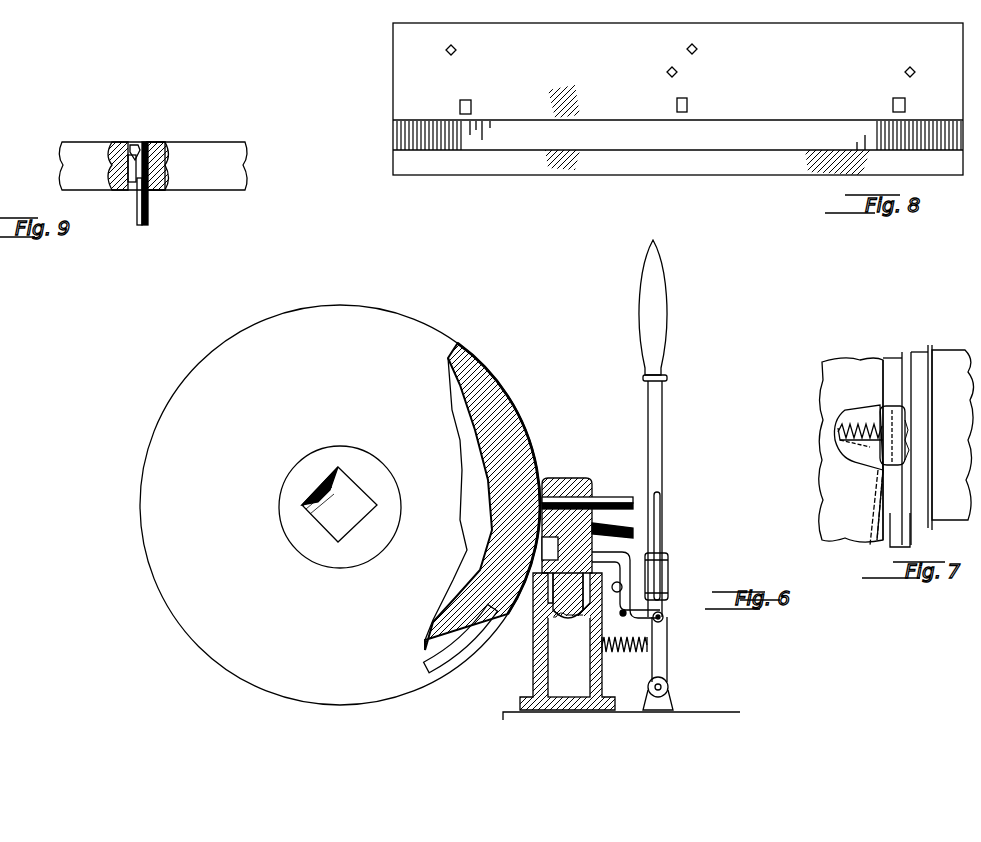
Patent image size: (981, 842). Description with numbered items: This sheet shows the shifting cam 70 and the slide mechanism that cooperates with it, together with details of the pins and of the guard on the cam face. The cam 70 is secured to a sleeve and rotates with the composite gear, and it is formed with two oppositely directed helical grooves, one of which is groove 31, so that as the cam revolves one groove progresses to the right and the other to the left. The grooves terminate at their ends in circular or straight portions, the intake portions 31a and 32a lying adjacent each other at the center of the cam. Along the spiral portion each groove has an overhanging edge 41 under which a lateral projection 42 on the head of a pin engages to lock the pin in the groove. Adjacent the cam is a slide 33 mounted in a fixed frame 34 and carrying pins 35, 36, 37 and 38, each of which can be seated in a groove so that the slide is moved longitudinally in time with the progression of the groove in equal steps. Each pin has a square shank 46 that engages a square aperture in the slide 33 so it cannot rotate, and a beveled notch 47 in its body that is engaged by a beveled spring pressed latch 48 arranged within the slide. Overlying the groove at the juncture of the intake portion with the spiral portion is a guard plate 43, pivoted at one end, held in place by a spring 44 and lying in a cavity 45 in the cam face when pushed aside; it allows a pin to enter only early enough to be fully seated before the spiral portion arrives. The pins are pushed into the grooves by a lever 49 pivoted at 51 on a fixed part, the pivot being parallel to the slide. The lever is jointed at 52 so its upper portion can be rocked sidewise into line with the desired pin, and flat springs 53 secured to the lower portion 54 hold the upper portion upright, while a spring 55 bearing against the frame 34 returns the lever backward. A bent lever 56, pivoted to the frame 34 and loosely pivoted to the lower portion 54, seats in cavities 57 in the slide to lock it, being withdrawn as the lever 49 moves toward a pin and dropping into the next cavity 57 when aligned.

In FIG. 6, the shifting cam 70 is at (515, 437).
In FIG. 7, the shifting cam 70 is at (953, 437).
In FIG. 6, the overhanging edge 41 is at (455, 660).
In FIG. 7, the overhanging edge 41 is at (878, 505).
In FIG. 6, the slide 33 is at (572, 483).
In FIG. 8, the slide 33 is at (678, 99).
In FIG. 9, the slide 33 is at (153, 166).
In FIG. 6, the pin 35 is at (608, 497).
In FIG. 8, the pin 35 is at (446, 55).
In FIG. 6, the pin 36 is at (633, 533).
In FIG. 8, the pin 36 is at (667, 77).
In FIG. 6, the fixed frame 34 is at (548, 670).
In FIG. 6, the bent lever 56 is at (600, 622).
In FIG. 6, the spring 55 is at (622, 655).
In FIG. 6, the lever 49 is at (662, 448).
In FIG. 6, the flat springs 53 is at (660, 503).
In FIG. 6, the joint 52 is at (668, 575).
In FIG. 6, the lower portion of the lever 54 is at (667, 650).
In FIG. 6, the pivot 51 is at (668, 687).
In FIG. 7, the helical groove 31 is at (880, 540).
In FIG. 7, the straight portion of groove 31 31a is at (900, 352).
In FIG. 7, the straight portion of groove 32 32a is at (922, 358).
In FIG. 7, the spring 44 is at (860, 428).
In FIG. 7, the guard plate 43 is at (895, 440).
In FIG. 7, the cavity 45 is at (855, 452).
In FIG. 8, the pin 37 is at (696, 54).
In FIG. 8, the pin 38 is at (915, 70).
In FIG. 8, the cavities 57 is at (918, 102).
In FIG. 9, the lateral projection 42 is at (134, 146).
In FIG. 9, the beveled notch 47 is at (158, 147).
In FIG. 9, the spring pressed latch 48 is at (128, 162).
In FIG. 9, the shank 46 is at (148, 210).